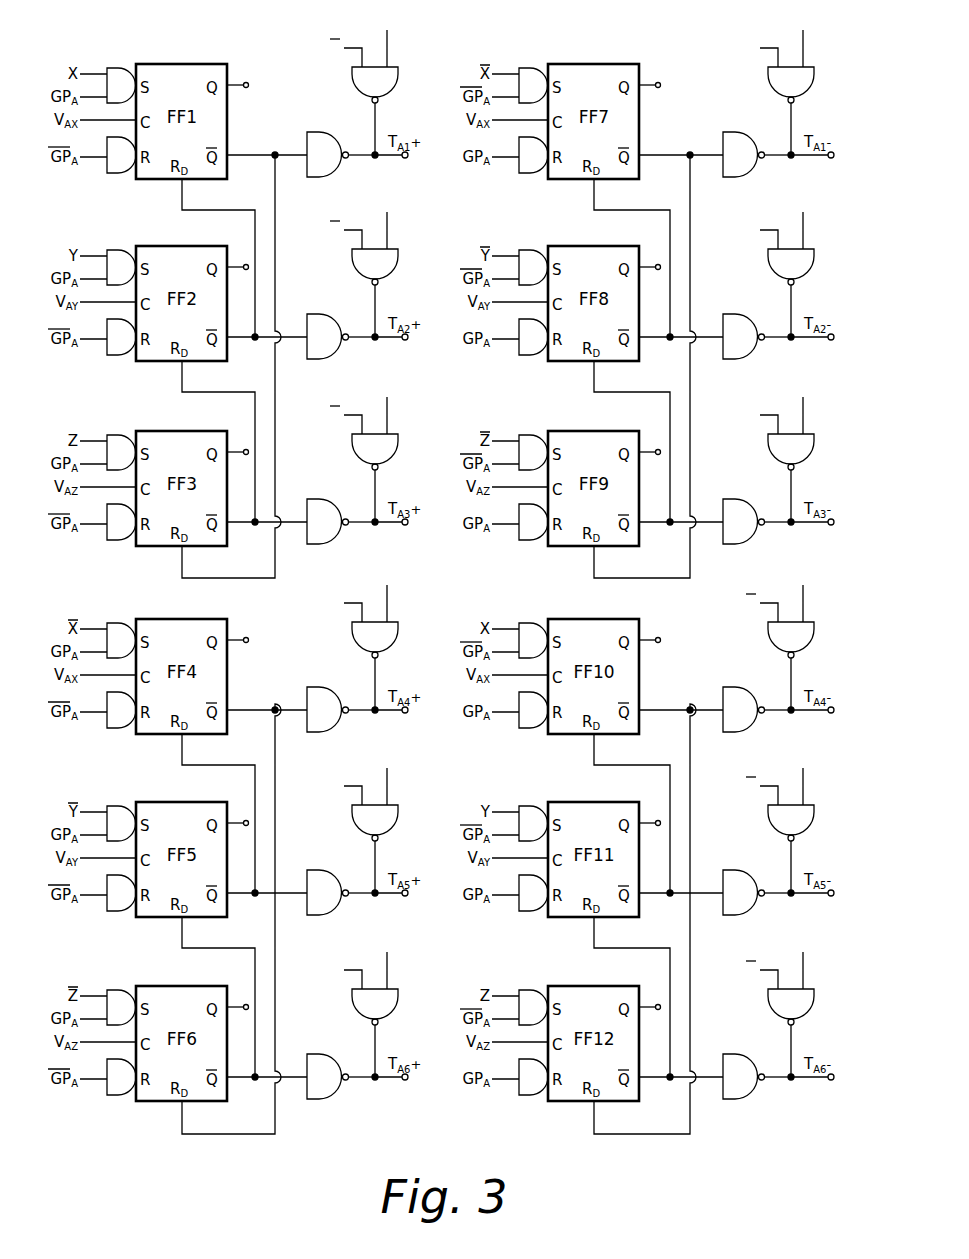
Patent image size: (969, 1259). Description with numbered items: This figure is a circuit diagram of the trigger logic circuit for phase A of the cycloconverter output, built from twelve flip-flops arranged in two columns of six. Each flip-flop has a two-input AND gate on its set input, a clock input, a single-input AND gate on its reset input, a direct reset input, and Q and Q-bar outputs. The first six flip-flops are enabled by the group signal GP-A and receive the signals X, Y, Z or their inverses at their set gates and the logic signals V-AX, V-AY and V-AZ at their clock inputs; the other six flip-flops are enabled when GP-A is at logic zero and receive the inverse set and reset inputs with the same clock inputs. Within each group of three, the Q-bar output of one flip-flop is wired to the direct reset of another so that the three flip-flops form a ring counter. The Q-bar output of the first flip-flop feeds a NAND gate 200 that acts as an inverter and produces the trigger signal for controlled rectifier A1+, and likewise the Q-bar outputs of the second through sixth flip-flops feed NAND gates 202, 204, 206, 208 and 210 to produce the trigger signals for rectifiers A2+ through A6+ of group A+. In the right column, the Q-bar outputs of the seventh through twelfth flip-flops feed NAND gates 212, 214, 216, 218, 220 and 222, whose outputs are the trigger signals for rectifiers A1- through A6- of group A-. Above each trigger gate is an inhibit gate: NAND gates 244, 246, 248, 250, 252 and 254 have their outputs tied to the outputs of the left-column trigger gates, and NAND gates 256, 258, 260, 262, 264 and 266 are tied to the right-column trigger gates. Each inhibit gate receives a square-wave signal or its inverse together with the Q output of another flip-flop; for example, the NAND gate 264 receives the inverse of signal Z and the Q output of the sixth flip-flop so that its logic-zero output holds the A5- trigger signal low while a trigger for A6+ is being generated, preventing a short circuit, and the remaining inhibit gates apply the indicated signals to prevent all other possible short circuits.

The NAND gate 200 is at (322, 143).
The NAND gate 202 is at (322, 325).
The NAND gate 204 is at (322, 510).
The NAND gate 206 is at (324, 698).
The NAND gate 208 is at (323, 881).
The NAND gate 210 is at (323, 1065).
The NAND gate 212 is at (740, 140).
The NAND gate 214 is at (738, 327).
The NAND gate 216 is at (738, 512).
The NAND gate 218 is at (738, 700).
The NAND gate 220 is at (738, 883).
The NAND gate 222 is at (742, 1090).
The NAND gate 244 is at (388, 80).
The NAND gate 246 is at (388, 262).
The NAND gate 248 is at (388, 447).
The NAND gate 250 is at (388, 636).
The NAND gate 252 is at (390, 821).
The NAND gate 254 is at (390, 1004).
The NAND gate 256 is at (785, 75).
The NAND gate 258 is at (794, 262).
The NAND gate 260 is at (794, 450).
The NAND gate 262 is at (795, 638).
The NAND gate 264 is at (795, 820).
The NAND gate 266 is at (782, 1003).